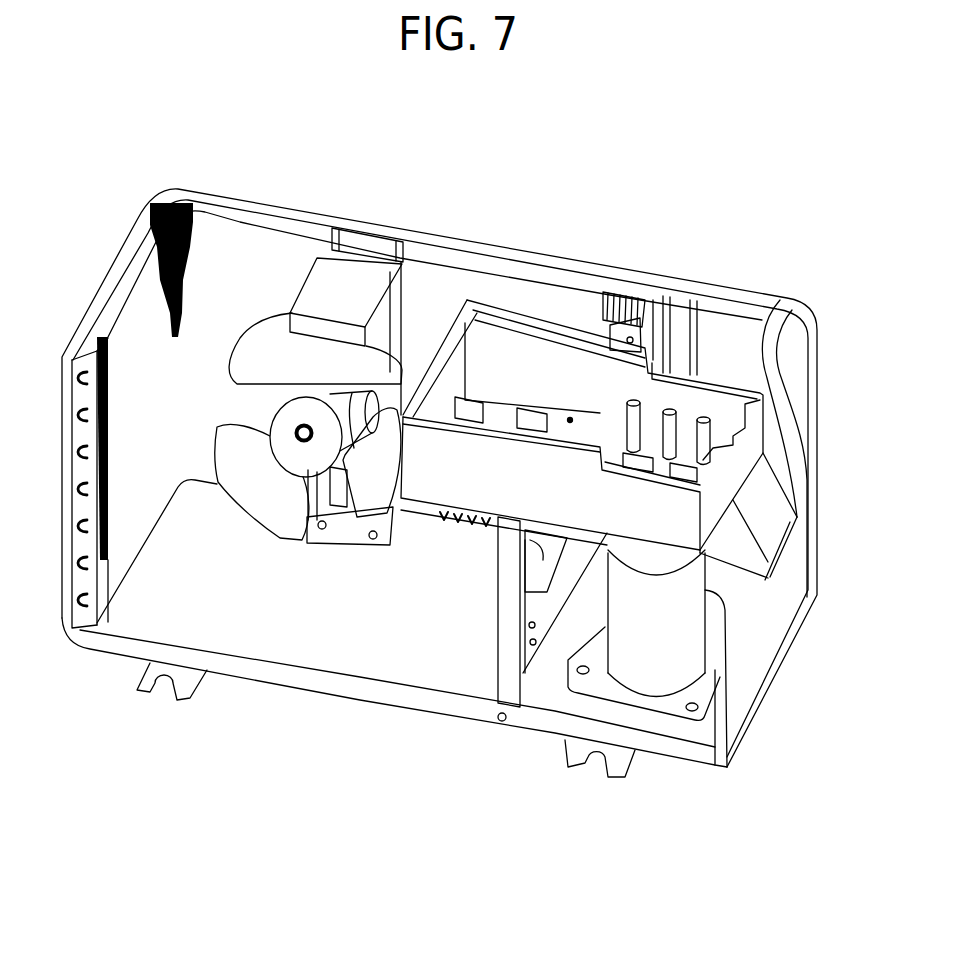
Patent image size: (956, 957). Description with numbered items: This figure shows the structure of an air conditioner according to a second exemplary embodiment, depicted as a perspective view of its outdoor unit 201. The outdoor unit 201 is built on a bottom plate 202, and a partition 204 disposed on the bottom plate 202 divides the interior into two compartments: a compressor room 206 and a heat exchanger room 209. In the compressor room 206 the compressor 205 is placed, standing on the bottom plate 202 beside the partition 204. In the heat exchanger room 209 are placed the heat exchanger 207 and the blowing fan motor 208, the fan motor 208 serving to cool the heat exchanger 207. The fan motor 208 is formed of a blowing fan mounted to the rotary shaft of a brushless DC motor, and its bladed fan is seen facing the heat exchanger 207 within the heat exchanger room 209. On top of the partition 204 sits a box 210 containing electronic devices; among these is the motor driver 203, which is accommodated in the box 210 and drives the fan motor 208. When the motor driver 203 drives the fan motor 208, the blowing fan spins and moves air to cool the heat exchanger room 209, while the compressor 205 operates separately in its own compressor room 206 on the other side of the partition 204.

The outdoor unit 201 is at (607, 241).
The bottom plate 202 is at (287, 633).
The motor driver 203 is at (431, 430).
The partition 204 is at (507, 658).
The compressor 205 is at (690, 628).
The compressor room 206 is at (553, 690).
The heat exchanger 207 is at (283, 228).
The blowing fan motor 208 is at (253, 500).
The heat exchanger room 209 is at (133, 627).
The box 210 is at (787, 300).